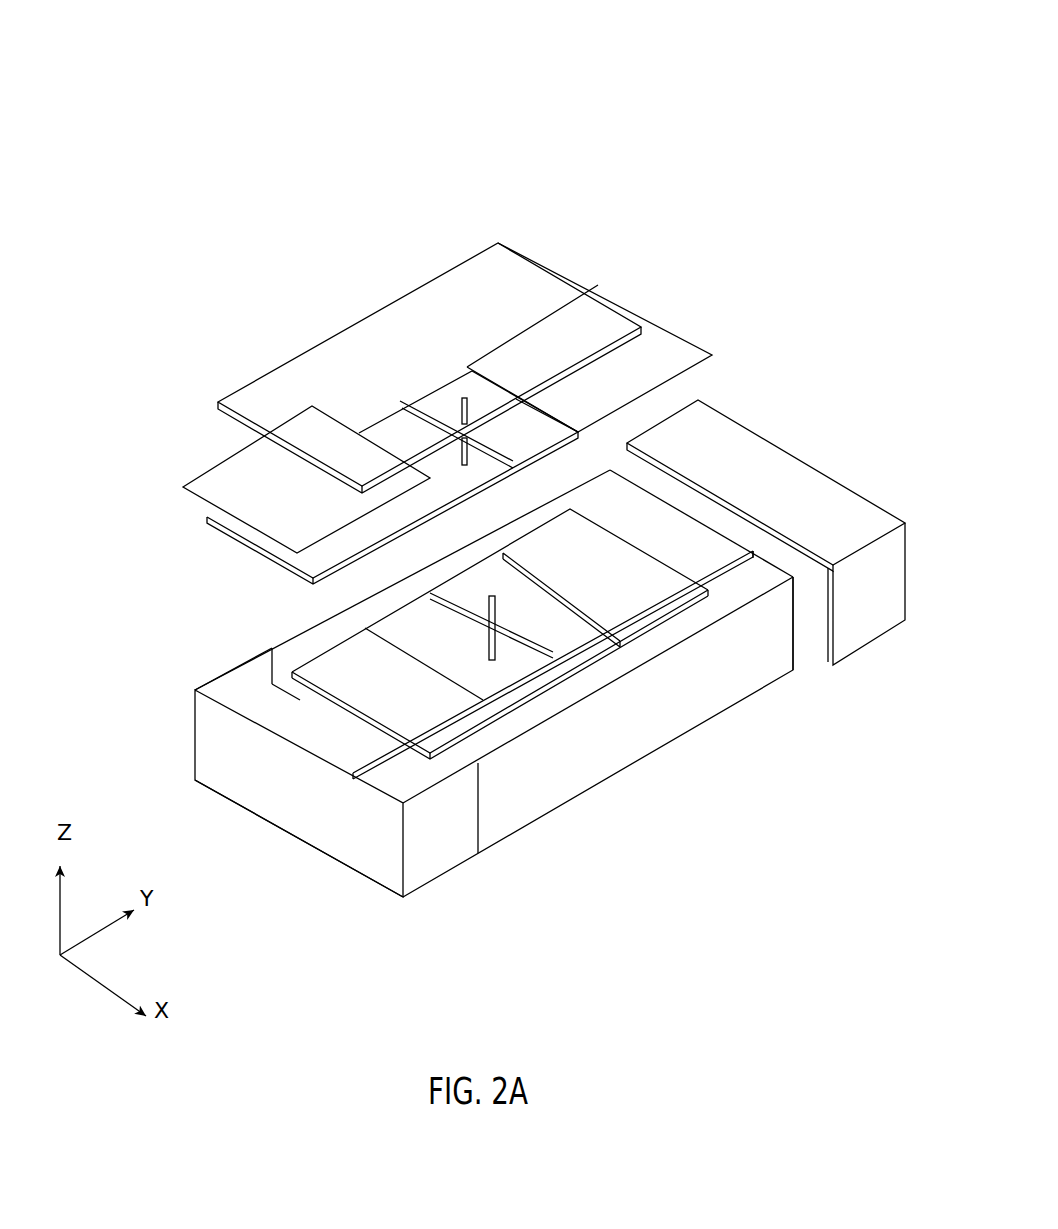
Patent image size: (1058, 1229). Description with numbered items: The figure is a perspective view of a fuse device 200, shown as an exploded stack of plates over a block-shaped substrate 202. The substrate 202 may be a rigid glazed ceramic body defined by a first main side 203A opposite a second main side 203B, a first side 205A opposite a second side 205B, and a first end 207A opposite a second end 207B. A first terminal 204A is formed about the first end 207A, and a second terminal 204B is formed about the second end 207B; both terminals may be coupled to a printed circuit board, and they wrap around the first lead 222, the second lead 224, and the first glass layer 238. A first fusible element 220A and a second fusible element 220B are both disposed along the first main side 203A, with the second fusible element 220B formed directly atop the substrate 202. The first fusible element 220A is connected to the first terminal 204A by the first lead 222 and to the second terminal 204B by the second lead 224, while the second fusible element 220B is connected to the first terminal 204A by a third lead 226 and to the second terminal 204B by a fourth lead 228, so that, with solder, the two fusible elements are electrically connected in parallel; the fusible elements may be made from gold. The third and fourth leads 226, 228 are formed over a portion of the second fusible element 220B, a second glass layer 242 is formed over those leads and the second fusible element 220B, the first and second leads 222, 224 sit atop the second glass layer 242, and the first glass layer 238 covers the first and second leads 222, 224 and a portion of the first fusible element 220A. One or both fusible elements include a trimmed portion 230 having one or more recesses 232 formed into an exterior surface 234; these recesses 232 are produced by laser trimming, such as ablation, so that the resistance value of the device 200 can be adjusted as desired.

The fuse device 200 is at (810, 130).
The substrate 202 is at (612, 741).
The first main side 203A is at (315, 637).
The second main side 203B is at (706, 728).
The first terminal 204A is at (437, 852).
The second terminal 204B is at (822, 490).
The first side 205A is at (233, 672).
The second side 205B is at (587, 765).
The first end 207A is at (368, 897).
The second end 207B is at (798, 650).
The first fusible element 220A is at (518, 428).
The second fusible element 220B is at (478, 702).
The first lead 222 is at (257, 497).
The second lead 224 is at (668, 358).
The third lead 226 is at (257, 705).
The fourth lead 228 is at (700, 548).
The trimmed portion 230 is at (472, 442).
The recesses 232 is at (490, 447).
The exterior surface 234 is at (399, 506).
The first glass layer 238 is at (431, 338).
The second glass layer 242 is at (470, 652).